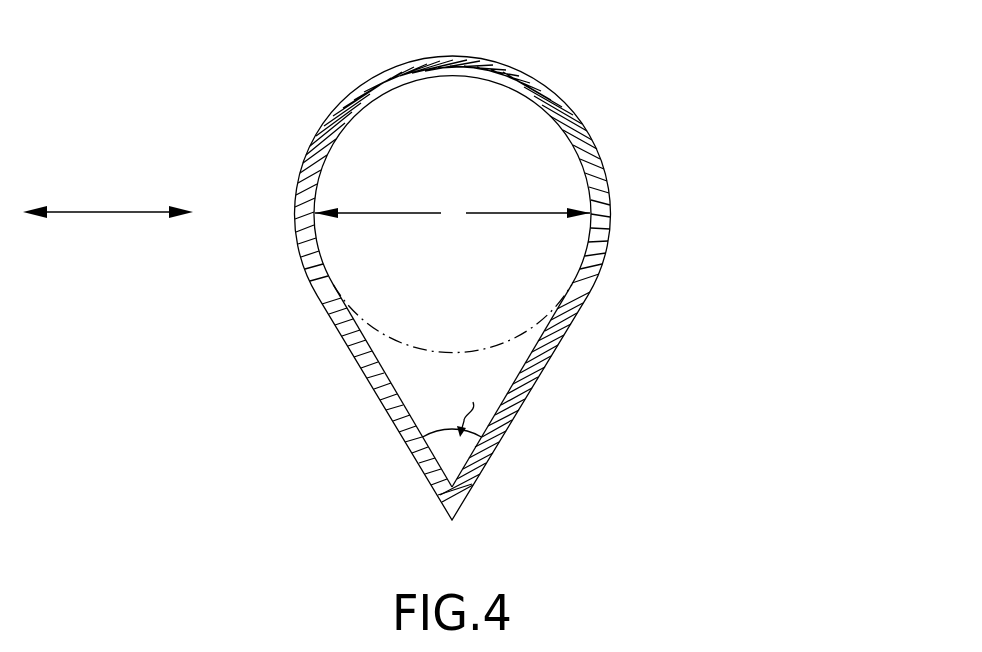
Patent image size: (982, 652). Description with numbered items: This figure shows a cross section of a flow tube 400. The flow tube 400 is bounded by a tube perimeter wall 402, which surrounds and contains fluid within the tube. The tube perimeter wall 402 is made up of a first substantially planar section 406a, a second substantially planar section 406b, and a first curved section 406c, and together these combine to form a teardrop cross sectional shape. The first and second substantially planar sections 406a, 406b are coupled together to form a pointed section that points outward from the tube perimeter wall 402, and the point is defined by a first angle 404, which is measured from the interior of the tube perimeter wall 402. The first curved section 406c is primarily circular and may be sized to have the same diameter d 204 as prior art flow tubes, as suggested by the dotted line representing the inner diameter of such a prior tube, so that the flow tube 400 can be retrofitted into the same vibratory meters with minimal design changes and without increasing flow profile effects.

The flow tube 400 is at (250, 88).
The tube perimeter wall 402 is at (568, 107).
The first curved section 406c is at (371, 88).
The first substantially planar section 406a is at (332, 293).
The second substantially planar section 406b is at (575, 292).
The diameter d 204 is at (420, 213).
The first angle 404 is at (439, 431).